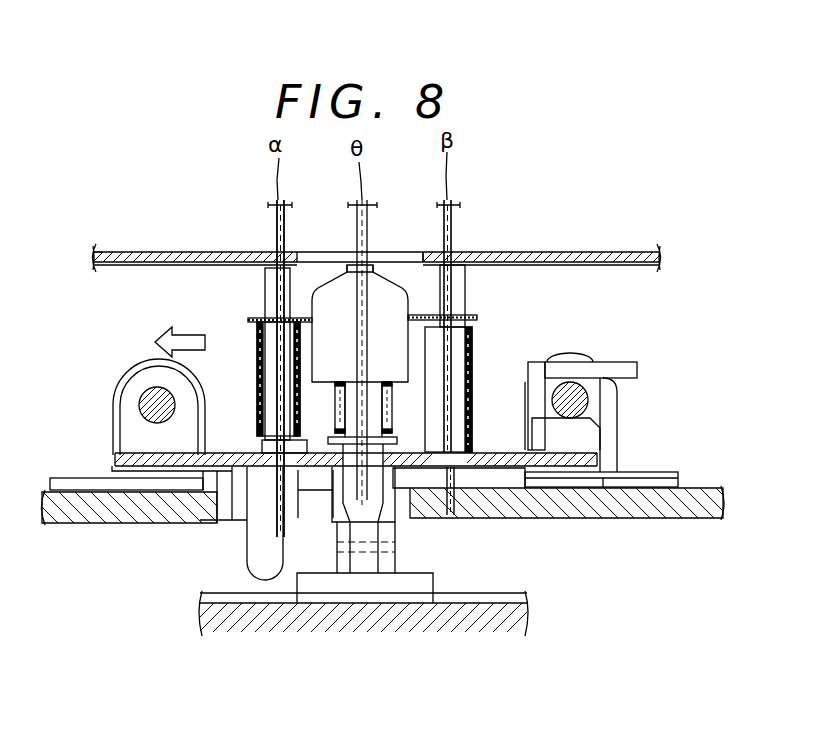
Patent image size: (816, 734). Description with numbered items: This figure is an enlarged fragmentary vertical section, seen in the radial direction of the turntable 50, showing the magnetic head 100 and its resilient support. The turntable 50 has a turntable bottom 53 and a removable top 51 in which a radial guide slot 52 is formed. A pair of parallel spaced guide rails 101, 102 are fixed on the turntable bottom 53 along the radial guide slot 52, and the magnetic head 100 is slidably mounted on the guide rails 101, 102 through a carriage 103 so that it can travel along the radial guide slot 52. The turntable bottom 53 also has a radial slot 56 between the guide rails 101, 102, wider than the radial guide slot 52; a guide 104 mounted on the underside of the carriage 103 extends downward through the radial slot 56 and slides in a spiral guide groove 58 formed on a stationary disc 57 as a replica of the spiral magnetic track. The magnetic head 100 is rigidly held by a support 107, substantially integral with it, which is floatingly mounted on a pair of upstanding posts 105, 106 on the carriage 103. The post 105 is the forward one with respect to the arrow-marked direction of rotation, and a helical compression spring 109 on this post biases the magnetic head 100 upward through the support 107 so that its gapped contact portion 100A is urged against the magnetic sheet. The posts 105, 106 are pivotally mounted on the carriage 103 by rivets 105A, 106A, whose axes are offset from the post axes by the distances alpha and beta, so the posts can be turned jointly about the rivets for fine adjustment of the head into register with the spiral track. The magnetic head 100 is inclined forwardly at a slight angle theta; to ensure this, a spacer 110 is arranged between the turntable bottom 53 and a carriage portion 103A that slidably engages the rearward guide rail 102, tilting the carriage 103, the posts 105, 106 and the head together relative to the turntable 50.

The turntable 50 is at (564, 187).
The top 51 is at (376, 212).
The radial guide slot 52 is at (463, 211).
The turntable bottom 53 is at (383, 520).
The radial slot 56 is at (411, 508).
The stationary disc 57 is at (363, 649).
The spiral guide groove 58 is at (363, 650).
The magnetic head 100 is at (354, 334).
The gapped contact portion 100A is at (392, 217).
The guide rail 101 is at (122, 407).
The guide rail 102 is at (582, 374).
The carriage 103 is at (316, 459).
The carriage portion 103A is at (664, 418).
The guide 104 is at (365, 639).
The post 105 is at (247, 368).
The rivet 105A is at (254, 510).
The post 106 is at (491, 326).
The rivet 106A is at (518, 511).
The support 107 is at (482, 312).
The helical compression spring 109 is at (218, 323).
The spacer 110 is at (396, 455).